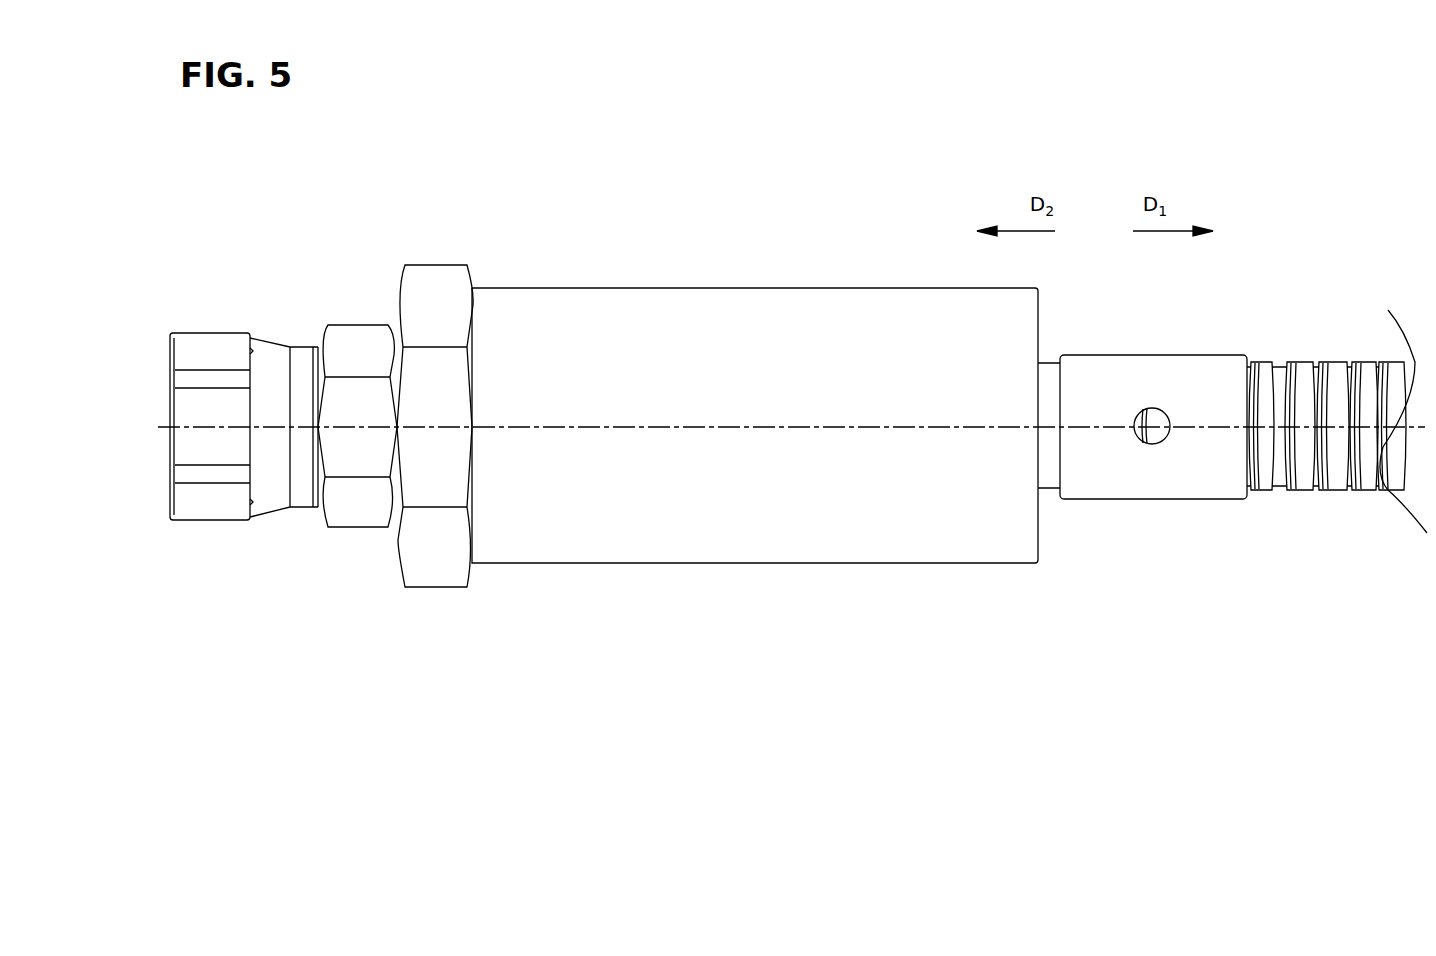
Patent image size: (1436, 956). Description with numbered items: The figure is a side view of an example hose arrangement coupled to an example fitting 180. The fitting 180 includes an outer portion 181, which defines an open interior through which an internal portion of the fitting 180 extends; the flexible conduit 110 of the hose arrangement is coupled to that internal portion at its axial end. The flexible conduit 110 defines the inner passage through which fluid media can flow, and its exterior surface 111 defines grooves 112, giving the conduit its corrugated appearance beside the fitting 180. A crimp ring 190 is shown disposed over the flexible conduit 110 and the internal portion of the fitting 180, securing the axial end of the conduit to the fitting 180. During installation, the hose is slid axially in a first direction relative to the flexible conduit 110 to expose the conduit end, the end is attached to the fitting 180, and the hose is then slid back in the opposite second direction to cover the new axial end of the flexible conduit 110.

The fitting 180 is at (565, 580).
The outer portion 181 is at (593, 289).
The crimp ring 190 is at (1137, 508).
The flexible conduit 110 is at (1337, 420).
The exterior surface 111 is at (1303, 490).
The grooves 112 is at (1347, 480).